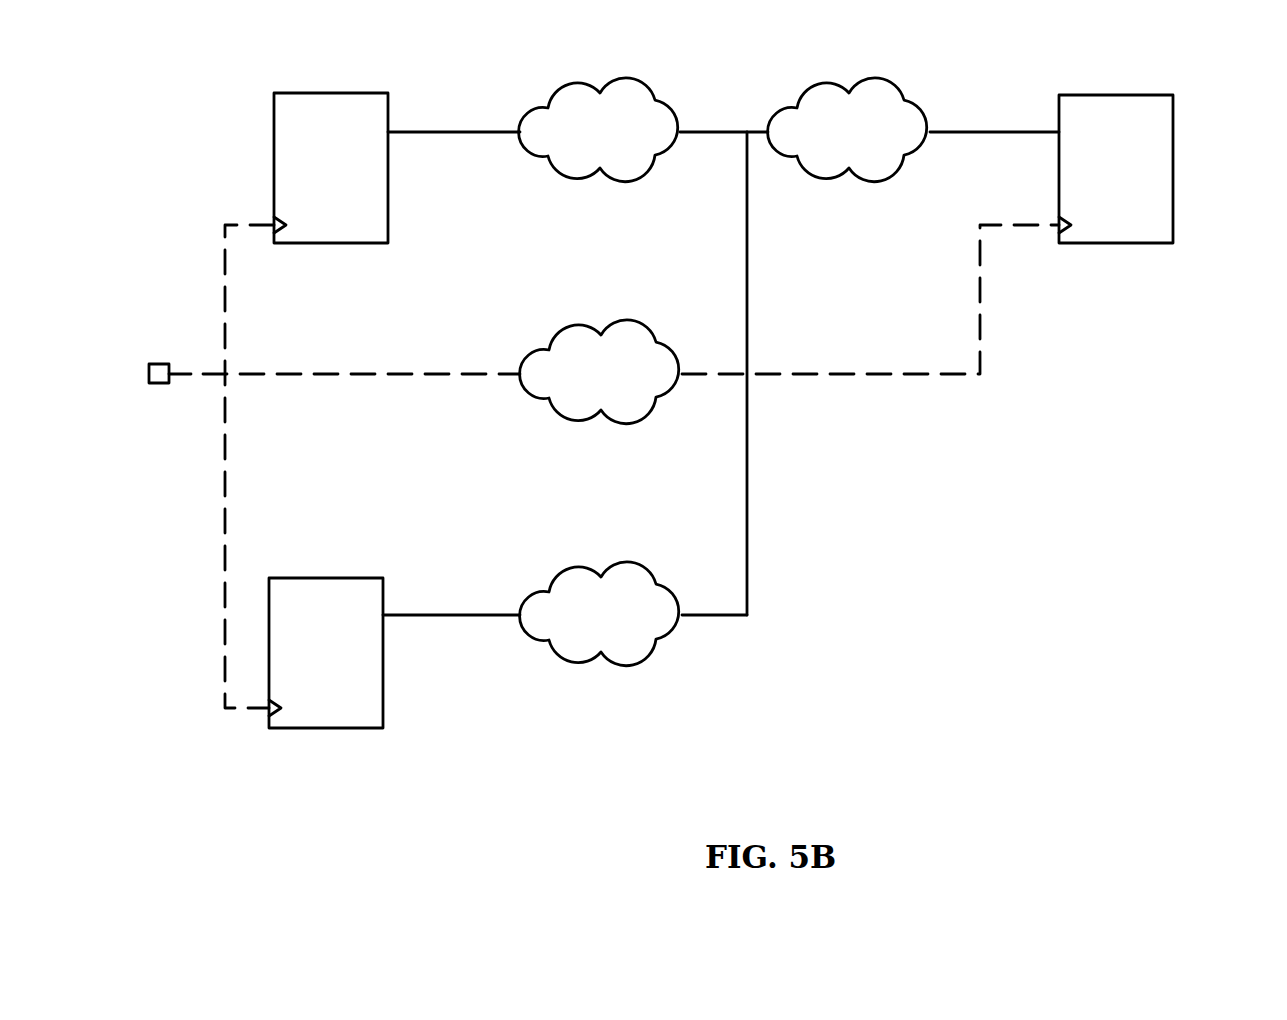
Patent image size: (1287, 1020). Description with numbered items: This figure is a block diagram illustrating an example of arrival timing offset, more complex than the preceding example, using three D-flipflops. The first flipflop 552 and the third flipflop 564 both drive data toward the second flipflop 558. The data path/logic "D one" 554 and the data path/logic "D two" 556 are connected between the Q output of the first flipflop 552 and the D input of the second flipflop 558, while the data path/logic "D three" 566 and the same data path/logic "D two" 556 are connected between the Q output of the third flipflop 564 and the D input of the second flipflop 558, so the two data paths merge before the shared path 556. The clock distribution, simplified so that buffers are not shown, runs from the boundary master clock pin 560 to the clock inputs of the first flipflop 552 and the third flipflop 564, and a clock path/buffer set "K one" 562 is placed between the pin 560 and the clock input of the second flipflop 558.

The D-flipflop FF1 552 is at (388, 110).
The data path/logic "D1" 554 is at (655, 100).
The data path/logic "D2" 556 is at (903, 100).
The D-flipflop FF2 558 is at (1173, 112).
The boundary master clock pin 560 is at (208, 466).
The clock path/buffer set "K1" 562 is at (627, 325).
The D-flipflop FF3 564 is at (383, 595).
The data path/logic "D3" 566 is at (648, 582).